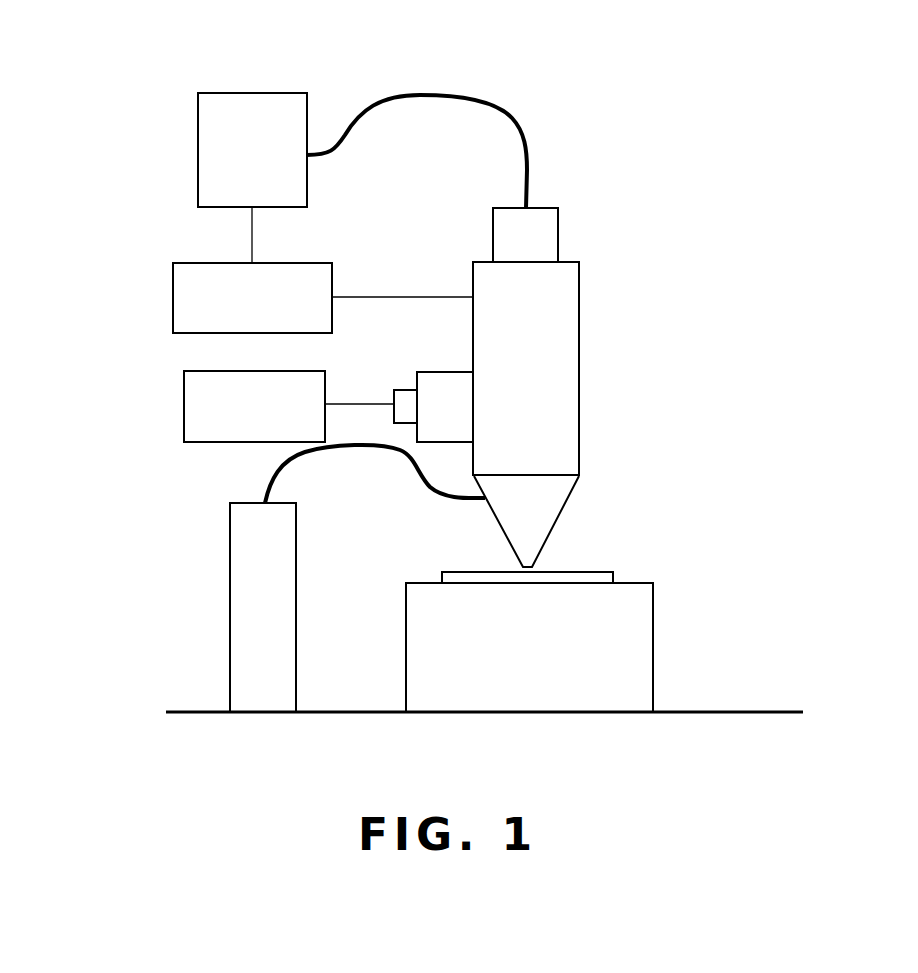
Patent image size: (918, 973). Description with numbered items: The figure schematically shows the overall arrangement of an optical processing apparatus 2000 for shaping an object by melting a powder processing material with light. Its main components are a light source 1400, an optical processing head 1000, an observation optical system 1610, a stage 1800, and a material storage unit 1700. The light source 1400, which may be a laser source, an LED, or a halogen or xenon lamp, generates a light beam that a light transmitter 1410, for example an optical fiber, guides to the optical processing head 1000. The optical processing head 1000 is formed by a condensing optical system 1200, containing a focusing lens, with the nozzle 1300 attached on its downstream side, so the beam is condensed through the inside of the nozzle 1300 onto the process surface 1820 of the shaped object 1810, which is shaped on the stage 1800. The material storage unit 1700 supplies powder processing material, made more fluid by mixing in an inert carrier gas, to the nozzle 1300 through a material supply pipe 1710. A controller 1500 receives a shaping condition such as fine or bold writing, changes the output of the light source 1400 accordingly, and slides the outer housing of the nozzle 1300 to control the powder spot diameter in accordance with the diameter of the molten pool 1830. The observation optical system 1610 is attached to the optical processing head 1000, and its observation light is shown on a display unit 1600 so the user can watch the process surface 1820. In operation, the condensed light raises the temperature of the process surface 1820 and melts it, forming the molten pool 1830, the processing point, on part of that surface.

The optical processing apparatus 2000 is at (133, 89).
The optical processing head 1000 is at (615, 387).
The condensing optical system 1200 is at (579, 441).
The nozzle 1300 is at (573, 521).
The light source 1400 is at (198, 148).
The light transmitter 1410 is at (513, 117).
The controller 1500 is at (173, 292).
The display unit 1600 is at (184, 402).
The observation optical system 1610 is at (433, 372).
The material storage unit 1700 is at (230, 604).
The material supply pipe 1710 is at (267, 476).
The stage 1800 is at (406, 640).
The shaped object 1810 is at (615, 572).
The process surface 1820 is at (462, 571).
The molten pool 1830 is at (530, 566).